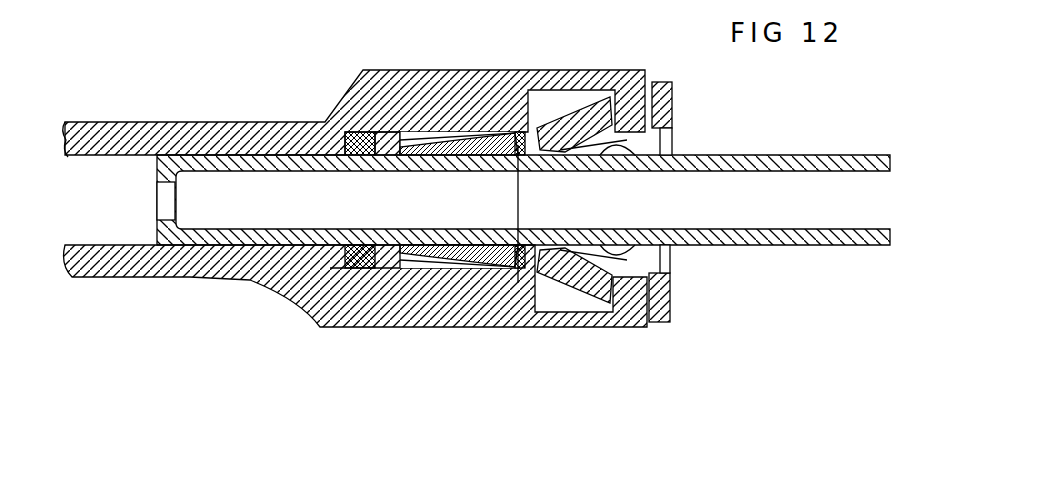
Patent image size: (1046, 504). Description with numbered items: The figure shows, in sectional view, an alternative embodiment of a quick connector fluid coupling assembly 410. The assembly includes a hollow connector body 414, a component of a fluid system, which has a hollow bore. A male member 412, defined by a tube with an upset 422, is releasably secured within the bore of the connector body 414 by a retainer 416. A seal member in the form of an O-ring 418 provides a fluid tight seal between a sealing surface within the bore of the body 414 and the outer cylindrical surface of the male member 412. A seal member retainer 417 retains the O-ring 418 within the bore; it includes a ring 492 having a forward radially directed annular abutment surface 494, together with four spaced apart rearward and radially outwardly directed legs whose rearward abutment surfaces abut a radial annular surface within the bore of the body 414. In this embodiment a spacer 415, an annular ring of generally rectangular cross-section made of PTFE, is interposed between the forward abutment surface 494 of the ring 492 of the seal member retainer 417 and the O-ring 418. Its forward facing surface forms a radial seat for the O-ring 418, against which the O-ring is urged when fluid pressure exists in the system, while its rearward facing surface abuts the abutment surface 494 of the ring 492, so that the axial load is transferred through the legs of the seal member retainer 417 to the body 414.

The fluid coupling assembly 410 is at (684, 125).
The male member 412 is at (797, 152).
The connector body 414 is at (366, 68).
The spacer 415 is at (370, 340).
The retainer 416 is at (671, 297).
The seal member retainer 417 is at (468, 328).
The O-ring 418 is at (325, 322).
The upset 422 is at (530, 328).
The ring 492 is at (375, 328).
The forward radially directed annular abutment surface 494 is at (462, 72).